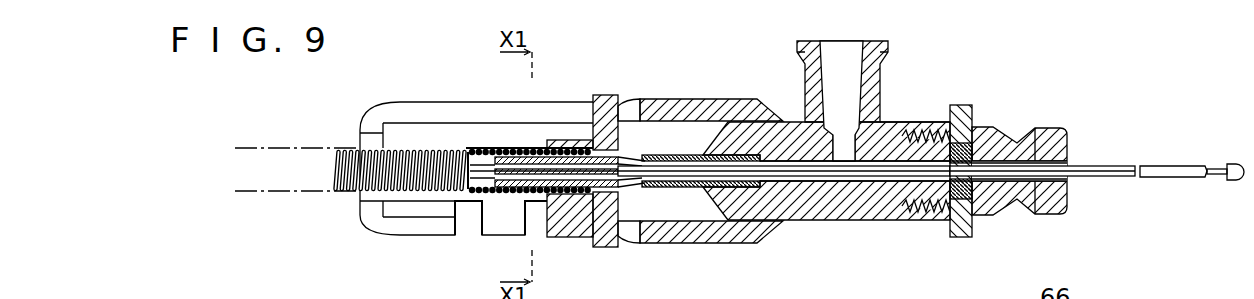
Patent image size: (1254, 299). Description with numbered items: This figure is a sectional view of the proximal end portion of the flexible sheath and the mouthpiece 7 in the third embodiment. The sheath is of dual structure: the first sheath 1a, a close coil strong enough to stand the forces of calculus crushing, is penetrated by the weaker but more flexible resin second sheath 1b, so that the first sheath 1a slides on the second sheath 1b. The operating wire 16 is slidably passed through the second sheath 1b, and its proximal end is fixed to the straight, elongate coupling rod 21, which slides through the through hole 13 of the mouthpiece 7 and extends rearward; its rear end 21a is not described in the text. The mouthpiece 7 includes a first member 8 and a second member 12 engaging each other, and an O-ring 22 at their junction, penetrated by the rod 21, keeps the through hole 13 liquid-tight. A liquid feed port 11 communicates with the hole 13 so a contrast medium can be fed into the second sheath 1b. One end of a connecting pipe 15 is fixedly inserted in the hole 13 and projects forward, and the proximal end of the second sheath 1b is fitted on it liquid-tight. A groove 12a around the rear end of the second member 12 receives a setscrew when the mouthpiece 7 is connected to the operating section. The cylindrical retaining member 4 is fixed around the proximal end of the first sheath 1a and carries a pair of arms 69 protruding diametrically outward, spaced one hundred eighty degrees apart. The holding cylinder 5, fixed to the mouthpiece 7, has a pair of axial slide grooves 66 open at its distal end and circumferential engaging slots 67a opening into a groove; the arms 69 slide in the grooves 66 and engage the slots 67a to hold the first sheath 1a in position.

The first sheath 1a is at (352, 193).
The second sheath 1b is at (477, 149).
The operating wire 16 is at (511, 168).
The arms 69 is at (604, 95).
The slide grooves 66 is at (631, 104).
The holding cylinder 5 is at (700, 99).
The first member 8 is at (790, 125).
The mouthpiece 7 is at (895, 106).
The liquid feed port 11 is at (845, 44).
The connecting pipe 15 is at (677, 159).
The through hole 13 is at (812, 178).
The O-ring 22 is at (966, 133).
The second member 12 is at (990, 133).
The groove 12a is at (1012, 132).
The coupling rod 21 is at (1108, 180).
The ball tip 21a is at (1225, 180).
The engaging slots 67a is at (528, 236).
The retaining member 4 is at (568, 198).